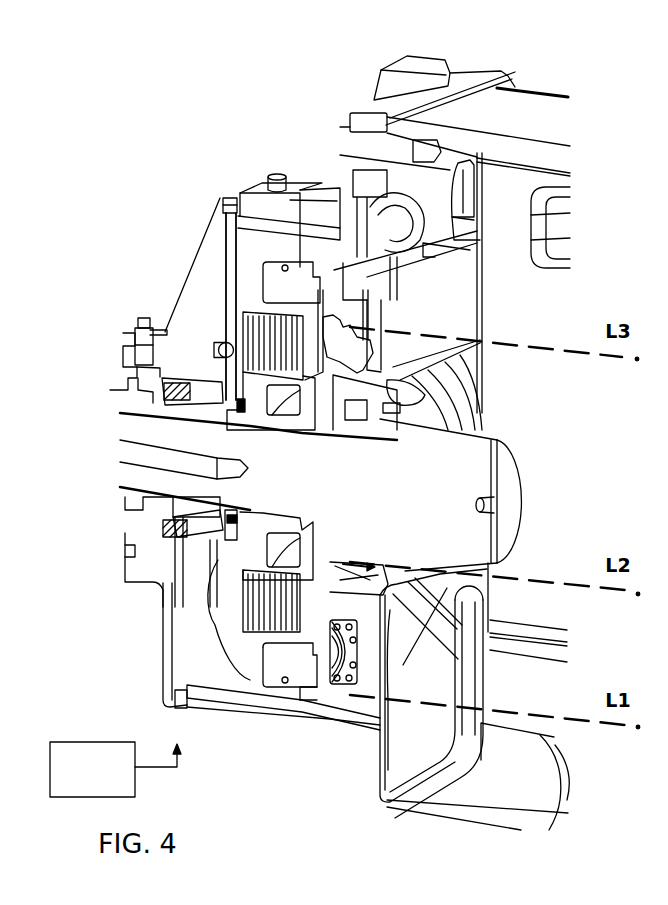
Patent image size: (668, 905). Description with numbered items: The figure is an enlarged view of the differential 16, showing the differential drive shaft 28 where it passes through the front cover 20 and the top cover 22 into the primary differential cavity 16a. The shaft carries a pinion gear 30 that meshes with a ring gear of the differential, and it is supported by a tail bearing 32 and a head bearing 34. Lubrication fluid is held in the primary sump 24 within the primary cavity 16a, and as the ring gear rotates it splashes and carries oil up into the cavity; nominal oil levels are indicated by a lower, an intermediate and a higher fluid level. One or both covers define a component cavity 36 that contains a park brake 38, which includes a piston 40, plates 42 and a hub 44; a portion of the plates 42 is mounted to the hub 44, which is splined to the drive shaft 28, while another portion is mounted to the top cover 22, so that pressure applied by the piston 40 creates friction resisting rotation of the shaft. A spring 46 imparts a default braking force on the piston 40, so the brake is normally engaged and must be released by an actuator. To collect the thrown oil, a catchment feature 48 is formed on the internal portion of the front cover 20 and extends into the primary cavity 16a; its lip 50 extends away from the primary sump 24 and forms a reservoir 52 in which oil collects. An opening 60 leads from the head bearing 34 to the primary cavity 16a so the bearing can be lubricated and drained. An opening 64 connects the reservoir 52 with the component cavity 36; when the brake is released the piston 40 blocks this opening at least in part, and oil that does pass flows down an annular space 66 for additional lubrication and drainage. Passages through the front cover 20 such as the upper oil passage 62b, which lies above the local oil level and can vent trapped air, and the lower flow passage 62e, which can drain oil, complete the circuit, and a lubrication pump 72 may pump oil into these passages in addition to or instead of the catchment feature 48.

The differential 16 is at (550, 54).
The primary differential cavity 16a is at (542, 560).
The front cover 20 is at (371, 87).
The top cover 22 is at (184, 294).
The primary sump 24 is at (549, 800).
The differential drive shaft 28 is at (122, 479).
The pinion gear 30 is at (469, 477).
The tail bearing 32 is at (197, 533).
The head bearing 34 is at (380, 417).
The component cavity 36 is at (228, 370).
The park brake 38 is at (215, 625).
The piston 40 is at (290, 283).
The plates 42 is at (247, 280).
The hub 44 is at (253, 417).
The spring 46 is at (340, 683).
The catchment feature 48 is at (454, 313).
The lip 50 is at (459, 242).
The reservoir 52 is at (374, 307).
The opening 60 is at (478, 670).
The oil passage 62b is at (345, 235).
The flow passage 62e is at (377, 717).
The opening 64 is at (352, 357).
The annular space 66 is at (320, 297).
The pump 72 is at (113, 741).